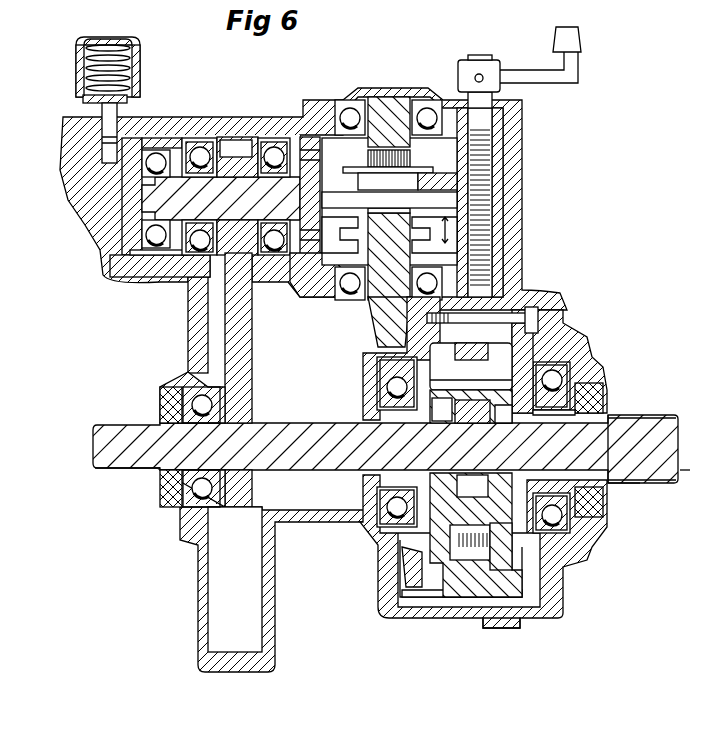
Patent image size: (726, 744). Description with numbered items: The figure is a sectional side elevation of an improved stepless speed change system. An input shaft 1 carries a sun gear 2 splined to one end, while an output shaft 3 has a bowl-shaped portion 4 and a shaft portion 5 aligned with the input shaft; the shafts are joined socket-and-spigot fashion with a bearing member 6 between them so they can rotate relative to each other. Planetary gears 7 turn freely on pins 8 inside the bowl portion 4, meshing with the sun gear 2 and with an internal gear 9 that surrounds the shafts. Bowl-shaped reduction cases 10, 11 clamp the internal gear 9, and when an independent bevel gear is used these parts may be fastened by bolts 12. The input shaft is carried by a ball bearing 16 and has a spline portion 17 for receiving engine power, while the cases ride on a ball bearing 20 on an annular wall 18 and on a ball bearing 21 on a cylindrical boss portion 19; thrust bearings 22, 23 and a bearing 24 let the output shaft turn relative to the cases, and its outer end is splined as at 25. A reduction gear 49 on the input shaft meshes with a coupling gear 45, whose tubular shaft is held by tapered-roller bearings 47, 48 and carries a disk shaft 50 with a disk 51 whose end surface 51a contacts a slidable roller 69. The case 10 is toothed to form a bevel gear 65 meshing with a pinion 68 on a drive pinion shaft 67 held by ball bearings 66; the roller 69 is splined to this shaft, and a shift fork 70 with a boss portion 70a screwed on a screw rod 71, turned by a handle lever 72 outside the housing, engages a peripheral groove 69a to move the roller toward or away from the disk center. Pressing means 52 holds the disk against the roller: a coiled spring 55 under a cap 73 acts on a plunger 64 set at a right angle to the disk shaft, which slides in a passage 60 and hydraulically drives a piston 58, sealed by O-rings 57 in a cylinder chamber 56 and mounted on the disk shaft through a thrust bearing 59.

The input shaft 1 is at (308, 423).
The sun gear 2 is at (462, 482).
The output shaft 3 is at (688, 474).
The bowl-shaped portion 4 is at (495, 527).
The shaft portion 5 is at (680, 450).
The bearing member 6 is at (430, 410).
The planetary gear 7 is at (470, 350).
The pin 8 is at (533, 348).
The internal gear 9 is at (452, 540).
The reduction case 10 is at (430, 600).
The reduction case 11 is at (530, 612).
The bolts 12 is at (538, 315).
The ball bearing 16 is at (178, 512).
The spline portion 17 is at (126, 470).
The annular wall 18 is at (372, 370).
The cylindrical boss portion 19 is at (592, 370).
The ball bearing 20 is at (366, 532).
The ball bearing 21 is at (570, 545).
The thrust bearing 22 is at (448, 405).
The thrust bearing 23 is at (506, 410).
The bearing 24 is at (545, 415).
The spline portion 25 is at (630, 484).
The coupling gear 45 is at (237, 140).
The tapered-roller bearing 47 is at (200, 148).
The tapered-roller bearing 48 is at (275, 148).
The reduction gear 49 is at (252, 368).
The disk shaft 50 is at (140, 202).
The disk 51 is at (298, 272).
The end surface 51a is at (292, 200).
The pressing means 52 is at (74, 38).
The coiled spring 55 is at (140, 62).
The cylinder chamber 56 is at (130, 217).
The O-rings 57 is at (157, 262).
The piston 58 is at (138, 265).
The thrust bearing 59 is at (160, 152).
The passage 60 is at (102, 150).
The plunger 64 is at (100, 128).
The bevel gear 65 is at (398, 575).
The ball bearings 66 is at (345, 108).
The drive pinion shaft 67 is at (390, 98).
The pinion 68 is at (375, 325).
The slidable roller 69 is at (340, 208).
The peripheral groove 69a is at (345, 172).
The shift fork 70 is at (440, 173).
The boss portion 70a is at (505, 160).
The screw rod 71 is at (492, 228).
The handle lever 72 is at (570, 78).
The cap 73 is at (84, 80).